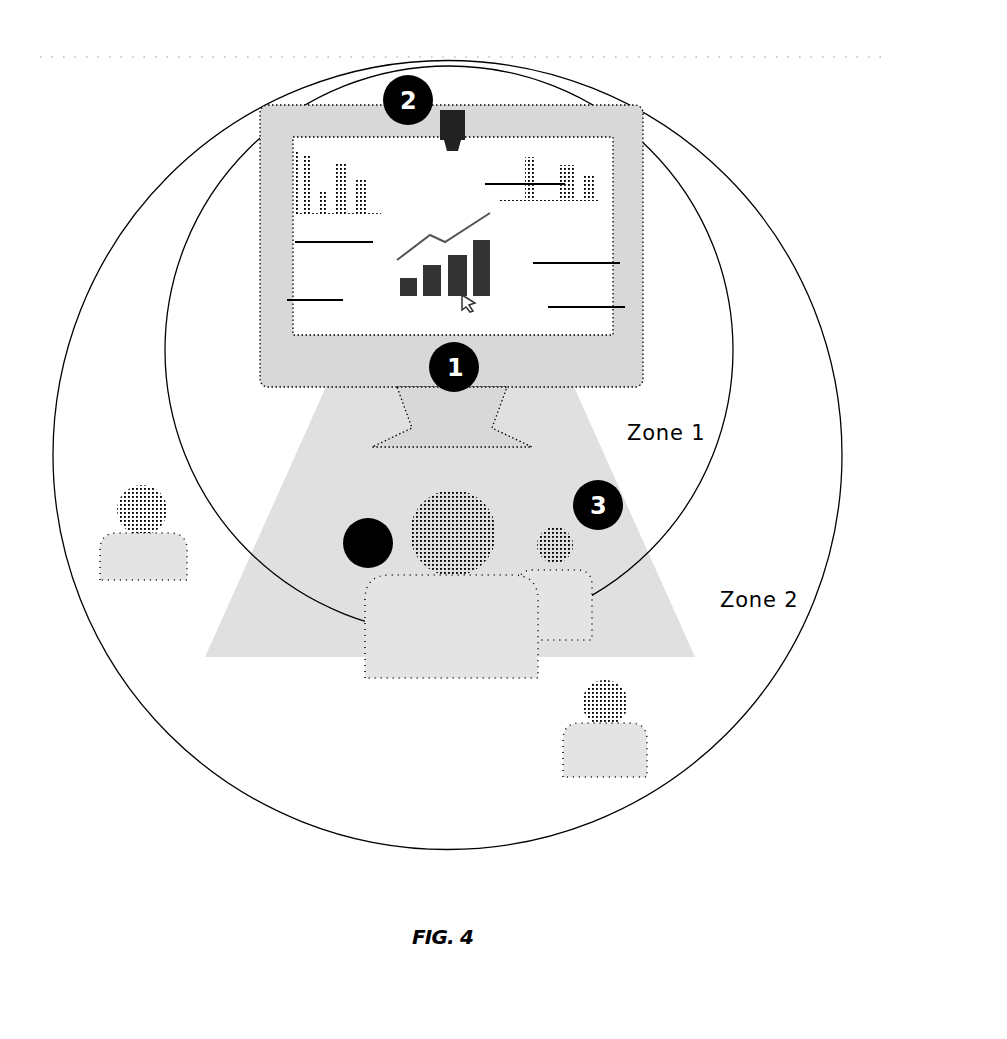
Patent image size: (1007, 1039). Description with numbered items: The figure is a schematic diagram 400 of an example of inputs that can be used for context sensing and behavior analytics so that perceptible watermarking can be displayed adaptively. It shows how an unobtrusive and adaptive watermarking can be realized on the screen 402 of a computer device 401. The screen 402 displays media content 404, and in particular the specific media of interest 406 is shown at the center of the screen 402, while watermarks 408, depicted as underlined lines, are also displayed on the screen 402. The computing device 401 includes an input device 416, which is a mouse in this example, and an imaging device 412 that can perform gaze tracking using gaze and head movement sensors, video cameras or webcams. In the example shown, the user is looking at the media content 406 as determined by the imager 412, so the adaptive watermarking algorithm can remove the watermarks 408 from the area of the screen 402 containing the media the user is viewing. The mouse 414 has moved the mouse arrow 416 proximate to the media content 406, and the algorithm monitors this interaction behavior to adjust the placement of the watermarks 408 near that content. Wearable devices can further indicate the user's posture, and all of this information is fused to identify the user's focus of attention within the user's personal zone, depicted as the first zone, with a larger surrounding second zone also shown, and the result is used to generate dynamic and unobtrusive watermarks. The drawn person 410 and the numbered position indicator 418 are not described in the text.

The schematic diagram 400 is at (902, 90).
The computer device 401 is at (655, 98).
The screen 402 is at (643, 330).
The media content 404 is at (585, 180).
The specific media of interest 406 is at (492, 243).
The watermarks 408 is at (615, 262).
The primary user 410 is at (467, 672).
The imaging device 412 is at (464, 112).
The mouse 414 is at (572, 546).
The input device 416 is at (477, 307).
The position indicator 418 is at (346, 538).